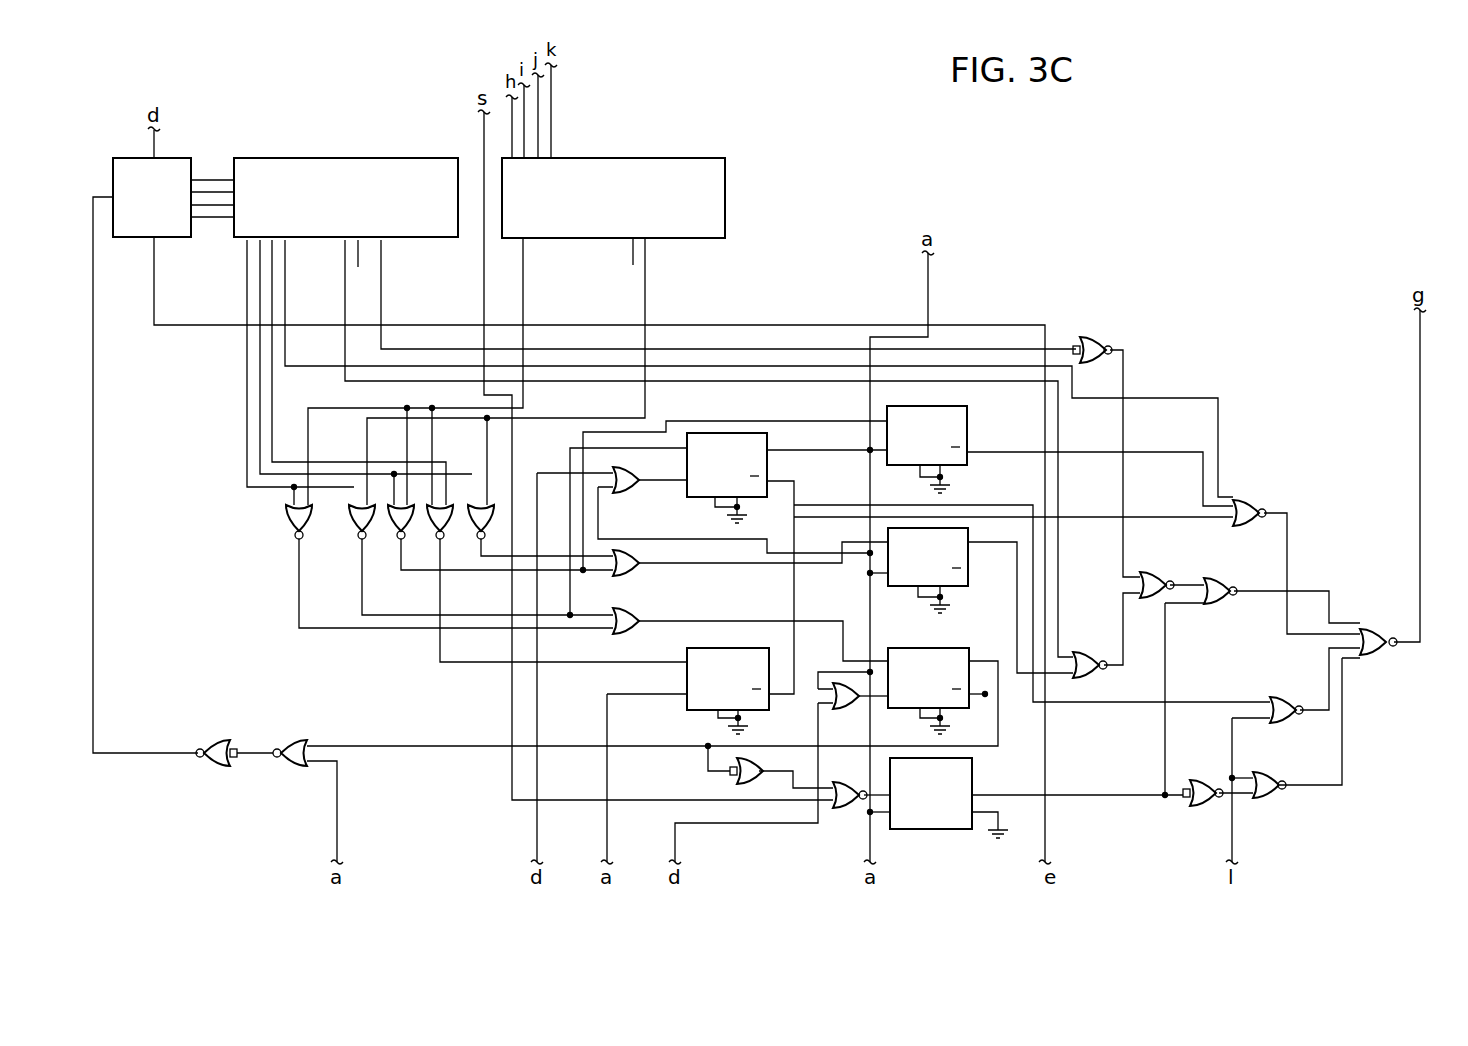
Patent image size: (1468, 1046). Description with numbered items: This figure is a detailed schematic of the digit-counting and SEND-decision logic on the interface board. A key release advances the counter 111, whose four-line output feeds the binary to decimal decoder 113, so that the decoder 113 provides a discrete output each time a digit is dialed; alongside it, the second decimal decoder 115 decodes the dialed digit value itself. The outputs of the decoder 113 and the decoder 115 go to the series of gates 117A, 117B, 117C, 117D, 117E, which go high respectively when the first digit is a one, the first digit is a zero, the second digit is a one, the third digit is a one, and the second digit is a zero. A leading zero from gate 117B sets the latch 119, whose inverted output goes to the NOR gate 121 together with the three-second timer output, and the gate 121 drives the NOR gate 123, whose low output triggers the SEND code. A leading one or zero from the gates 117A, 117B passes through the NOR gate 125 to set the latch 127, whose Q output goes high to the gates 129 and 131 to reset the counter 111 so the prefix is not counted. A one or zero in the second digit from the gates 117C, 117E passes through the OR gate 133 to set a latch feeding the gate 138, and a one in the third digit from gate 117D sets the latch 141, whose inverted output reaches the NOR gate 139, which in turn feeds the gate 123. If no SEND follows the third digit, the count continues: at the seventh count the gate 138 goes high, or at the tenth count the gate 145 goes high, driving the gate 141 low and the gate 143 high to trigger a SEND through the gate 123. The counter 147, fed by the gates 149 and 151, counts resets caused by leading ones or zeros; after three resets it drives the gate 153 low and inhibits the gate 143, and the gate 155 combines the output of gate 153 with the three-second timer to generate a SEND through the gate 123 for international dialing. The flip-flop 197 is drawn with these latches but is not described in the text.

The counter 111 is at (180, 233).
The binary to decimal converter or decoder 113 is at (318, 158).
The second decimal digit converter or decoder 115 is at (665, 158).
The NOR gate 117A is at (288, 517).
The gate 117B is at (354, 515).
The gate 117C is at (394, 518).
The gate 117D is at (434, 518).
The gate 117E is at (472, 518).
The latch 119 is at (727, 433).
The flip-flop 197 is at (967, 418).
The NOR gate 138 is at (968, 565).
The latch 127 is at (928, 660).
The latch / gate 141 is at (1152, 578).
The counter 147 is at (972, 771).
The gate 145 is at (1095, 340).
The NOR gate 139 is at (1252, 500).
The gate 143 is at (1212, 600).
The NOR gate 121 is at (1278, 700).
The NOR gate 123 is at (1375, 655).
The OR gate 133 is at (633, 573).
The NOR gate 125 is at (628, 633).
The gate 151 is at (737, 778).
The gate 149 is at (840, 808).
The gate 153 is at (1203, 805).
The gate 155 is at (1265, 795).
The gate 131 is at (222, 743).
The gate 129 is at (300, 743).